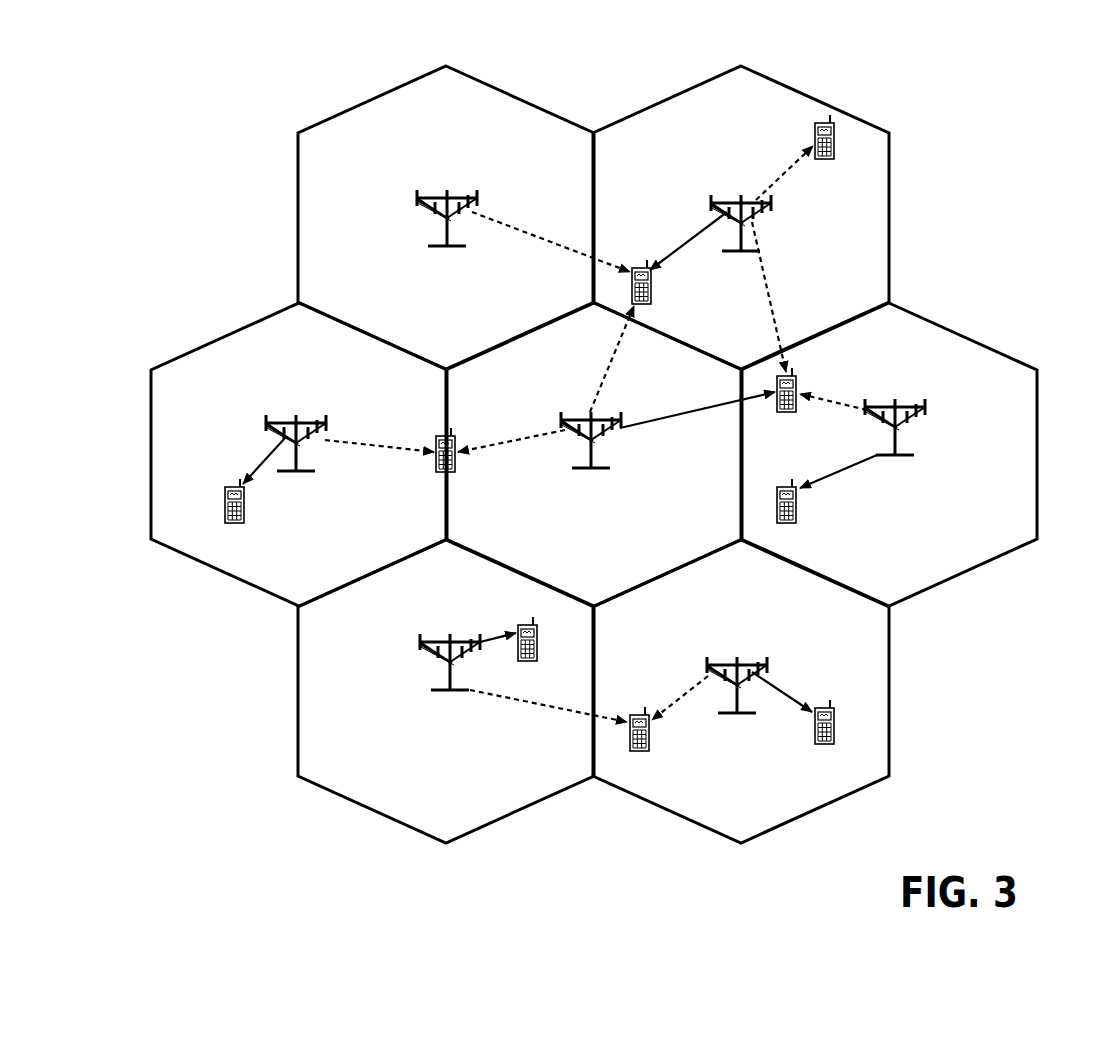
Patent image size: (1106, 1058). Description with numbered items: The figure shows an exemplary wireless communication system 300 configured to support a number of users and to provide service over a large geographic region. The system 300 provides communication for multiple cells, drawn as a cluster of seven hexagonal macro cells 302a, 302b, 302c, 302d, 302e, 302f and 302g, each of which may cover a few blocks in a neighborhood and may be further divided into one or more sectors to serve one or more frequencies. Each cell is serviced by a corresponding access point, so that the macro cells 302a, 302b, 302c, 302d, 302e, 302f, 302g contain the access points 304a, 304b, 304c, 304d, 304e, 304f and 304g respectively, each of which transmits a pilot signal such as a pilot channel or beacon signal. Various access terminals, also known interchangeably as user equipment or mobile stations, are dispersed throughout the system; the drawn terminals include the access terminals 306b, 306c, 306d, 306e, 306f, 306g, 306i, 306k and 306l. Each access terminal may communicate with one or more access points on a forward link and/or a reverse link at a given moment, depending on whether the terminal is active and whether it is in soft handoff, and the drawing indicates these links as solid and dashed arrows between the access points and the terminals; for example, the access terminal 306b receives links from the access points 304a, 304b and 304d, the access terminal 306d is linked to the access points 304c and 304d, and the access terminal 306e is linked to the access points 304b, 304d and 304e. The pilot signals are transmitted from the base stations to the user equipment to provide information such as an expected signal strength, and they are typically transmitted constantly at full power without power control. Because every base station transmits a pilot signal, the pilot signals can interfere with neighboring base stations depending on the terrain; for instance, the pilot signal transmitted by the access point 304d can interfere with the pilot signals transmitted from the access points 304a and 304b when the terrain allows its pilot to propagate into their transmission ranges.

The wireless communication system 300 is at (1006, 247).
The macro cell 302a is at (373, 100).
The macro cell 302b is at (818, 100).
The macro cell 302c is at (225, 337).
The macro cell 302d is at (614, 345).
The macro cell 302e is at (965, 337).
The macro cell 302f is at (298, 697).
The macro cell 302g is at (889, 697).
The access point 304a is at (417, 198).
The access point 304b is at (711, 202).
The access point 304c is at (280, 423).
The access point 304d is at (560, 422).
The access point 304e is at (926, 412).
The access point 304f is at (420, 642).
The access point 304g is at (708, 664).
The access terminal 306b is at (634, 268).
The access terminal 306c is at (225, 510).
The access terminal 306d is at (436, 445).
The access terminal 306e is at (798, 386).
The access terminal 306f is at (522, 625).
The access terminal 306g is at (635, 715).
The access terminal 306i is at (815, 132).
The access terminal 306k is at (782, 487).
The access terminal 306l is at (818, 708).